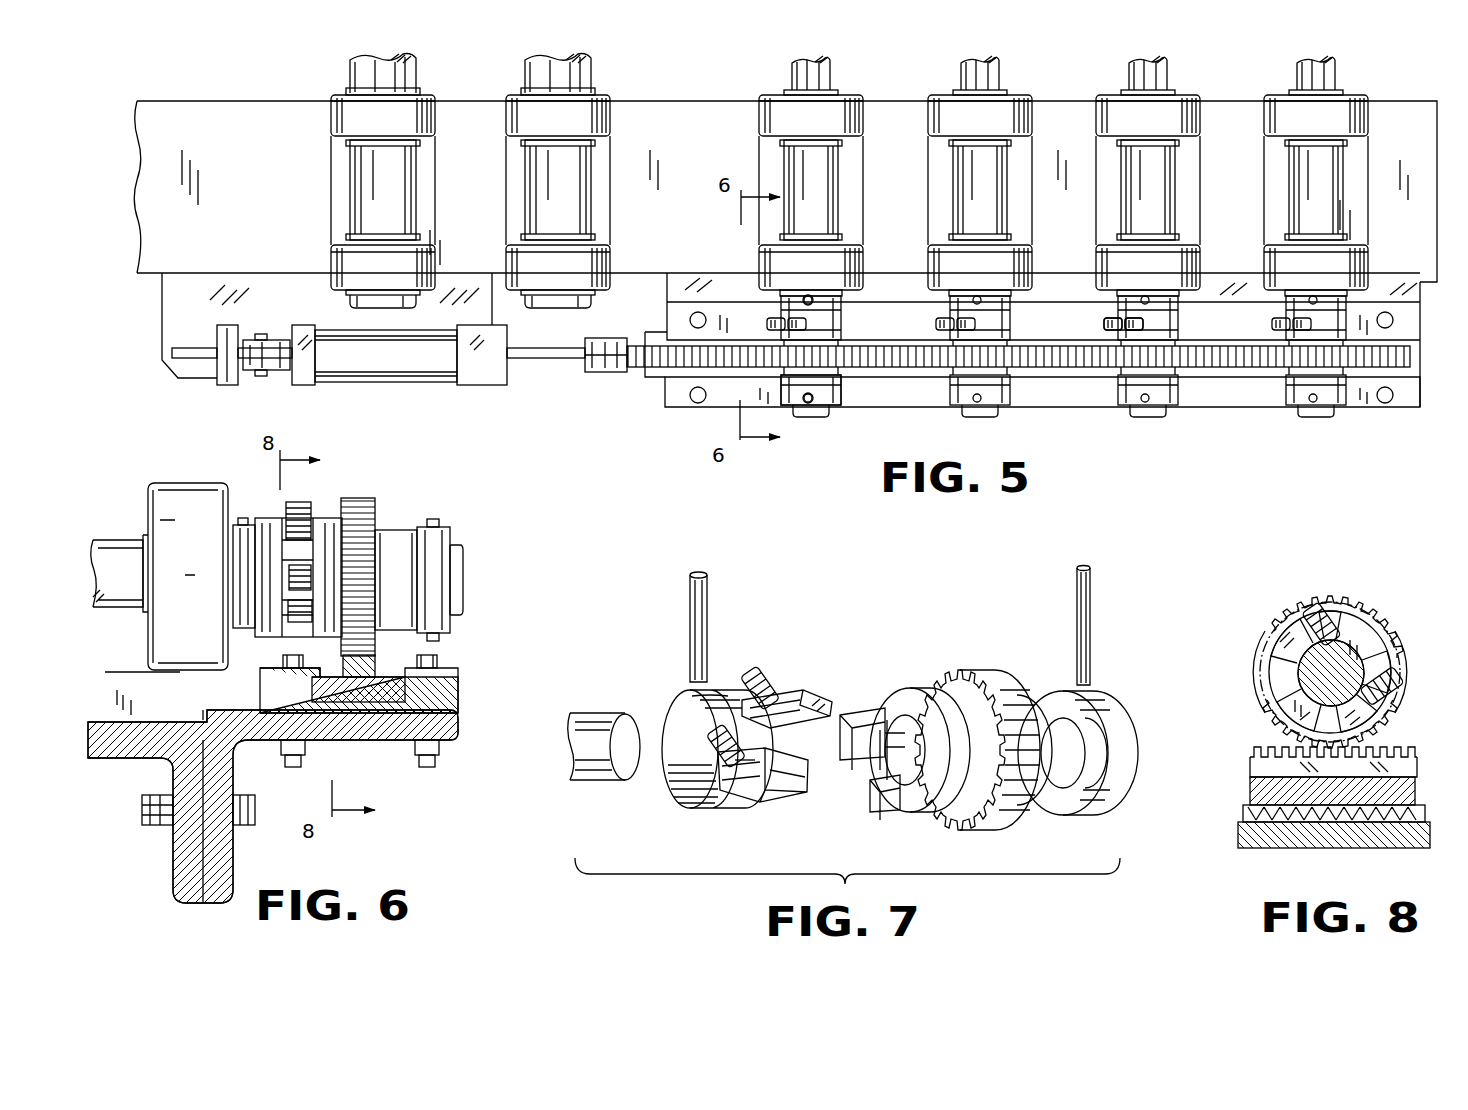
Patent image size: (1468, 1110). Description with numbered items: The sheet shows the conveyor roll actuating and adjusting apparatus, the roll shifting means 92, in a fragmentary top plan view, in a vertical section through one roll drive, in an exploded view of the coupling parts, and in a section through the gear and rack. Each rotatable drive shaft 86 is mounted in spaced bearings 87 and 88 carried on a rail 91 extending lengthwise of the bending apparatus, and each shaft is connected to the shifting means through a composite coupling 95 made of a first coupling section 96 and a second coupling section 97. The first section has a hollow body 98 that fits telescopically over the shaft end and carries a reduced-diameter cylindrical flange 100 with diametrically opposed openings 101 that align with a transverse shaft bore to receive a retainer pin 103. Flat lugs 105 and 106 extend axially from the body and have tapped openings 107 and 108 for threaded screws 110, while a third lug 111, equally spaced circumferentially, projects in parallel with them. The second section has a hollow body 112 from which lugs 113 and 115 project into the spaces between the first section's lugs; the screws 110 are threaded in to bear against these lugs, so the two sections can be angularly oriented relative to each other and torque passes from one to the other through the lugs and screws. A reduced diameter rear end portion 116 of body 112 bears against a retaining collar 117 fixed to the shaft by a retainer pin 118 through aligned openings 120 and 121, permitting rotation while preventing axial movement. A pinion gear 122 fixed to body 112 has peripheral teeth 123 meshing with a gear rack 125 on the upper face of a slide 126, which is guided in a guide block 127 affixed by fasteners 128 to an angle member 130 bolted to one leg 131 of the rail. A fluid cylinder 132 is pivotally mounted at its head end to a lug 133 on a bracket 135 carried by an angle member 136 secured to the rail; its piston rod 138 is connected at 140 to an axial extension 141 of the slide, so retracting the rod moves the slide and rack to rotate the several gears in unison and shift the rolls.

In FIG. 5, the drive shaft 86 is at (972, 80).
In FIG. 6, the drive shaft 86 is at (115, 545).
In FIG. 7, the drive shaft 86 is at (578, 762).
In FIG. 8, the drive shaft 86 is at (1345, 650).
In FIG. 5, the bearing 87 is at (935, 120).
In FIG. 5, the bearing 88 is at (938, 258).
In FIG. 6, the bearing 88 is at (150, 485).
In FIG. 5, the rail 91 is at (190, 115).
In FIG. 6, the rail 91 is at (135, 752).
In FIG. 5, the roll shifting means 92 is at (1108, 436).
In FIG. 5, the composite coupling 95 is at (925, 330).
In FIG. 6, the composite coupling 95 is at (377, 470).
In FIG. 7, the composite coupling 95 is at (880, 600).
In FIG. 6, the first coupling section 96 is at (315, 490).
In FIG. 7, the first coupling section 96 is at (728, 655).
In FIG. 6, the second coupling section 97 is at (412, 505).
In FIG. 7, the second coupling section 97 is at (958, 655).
In FIG. 6, the hollow body 98 is at (270, 518).
In FIG. 7, the hollow body 98 is at (705, 808).
In FIG. 6, the cylindrical flange 100 is at (262, 580).
In FIG. 7, the cylindrical flange 100 is at (672, 722).
In FIG. 7, the openings 101 is at (692, 694).
In FIG. 5, the retainer pin 103 is at (806, 296).
In FIG. 6, the retainer pin 103 is at (243, 518).
In FIG. 7, the retainer pin 103 is at (691, 595).
In FIG. 6, the lug 105 is at (284, 536).
In FIG. 7, the lug 105 is at (815, 700).
In FIG. 8, the lug 105 is at (1300, 622).
In FIG. 6, the lug 106 is at (290, 605).
In FIG. 7, the lug 106 is at (766, 802).
In FIG. 8, the lug 106 is at (1386, 698).
In FIG. 7, the tapped opening 107 is at (776, 698).
In FIG. 7, the tapped opening 108 is at (728, 802).
In FIG. 5, the threaded screws 110 is at (1136, 322).
In FIG. 6, the threaded screws 110 is at (306, 592).
In FIG. 7, the threaded screws 110 is at (764, 672).
In FIG. 8, the threaded screws 110 is at (1322, 604).
In FIG. 7, the third lug 111 is at (792, 766).
In FIG. 8, the third lug 111 is at (1292, 706).
In FIG. 6, the hollow body 112 is at (326, 520).
In FIG. 7, the hollow body 112 is at (892, 700).
In FIG. 8, the hollow body 112 is at (1380, 640).
In FIG. 7, the lug 113 is at (858, 720).
In FIG. 8, the lug 113 is at (1283, 657).
In FIG. 7, the lug 115 is at (882, 800).
In FIG. 8, the lug 115 is at (1358, 722).
In FIG. 6, the reduced diameter rear end portion 116 is at (414, 582).
In FIG. 7, the reduced diameter rear end portion 116 is at (1020, 720).
In FIG. 5, the retaining collar 117 is at (836, 401).
In FIG. 6, the retaining collar 117 is at (452, 540).
In FIG. 7, the retaining collar 117 is at (1112, 742).
In FIG. 5, the retainer pin 118 is at (807, 403).
In FIG. 6, the retainer pin 118 is at (438, 526).
In FIG. 7, the retainer pin 118 is at (1091, 602).
In FIG. 7, the opening 120 is at (1086, 697).
In FIG. 7, the opening 121 is at (604, 715).
In FIG. 5, the pinion gear 122 is at (940, 368).
In FIG. 6, the pinion gear 122 is at (378, 508).
In FIG. 7, the pinion gear 122 is at (932, 682).
In FIG. 8, the pinion gear 122 is at (1268, 730).
In FIG. 6, the peripheral teeth 123 is at (372, 498).
In FIG. 7, the peripheral teeth 123 is at (993, 670).
In FIG. 8, the peripheral teeth 123 is at (1283, 603).
In FIG. 5, the gear rack 125 is at (640, 368).
In FIG. 6, the gear rack 125 is at (372, 666).
In FIG. 8, the gear rack 125 is at (1256, 762).
In FIG. 5, the slide 126 is at (655, 385).
In FIG. 6, the slide 126 is at (368, 700).
In FIG. 8, the slide 126 is at (1416, 798).
In FIG. 5, the guide block 127 is at (668, 408).
In FIG. 6, the guide block 127 is at (452, 675).
In FIG. 8, the guide block 127 is at (1248, 812).
In FIG. 5, the fasteners 128 is at (701, 313).
In FIG. 6, the fasteners 128 is at (422, 655).
In FIG. 5, the angle member 130 is at (683, 283).
In FIG. 6, the angle member 130 is at (450, 740).
In FIG. 8, the angle member 130 is at (1244, 838).
In FIG. 6, the leg 131 is at (178, 862).
In FIG. 5, the fluid cylinder 132 is at (428, 355).
In FIG. 5, the lug 133 is at (248, 382).
In FIG. 5, the bracket 135 is at (222, 378).
In FIG. 5, the angle member 136 is at (172, 312).
In FIG. 5, the piston rod 138 is at (522, 360).
In FIG. 5, the connection 140 is at (590, 374).
In FIG. 5, the axial extension 141 is at (622, 340).